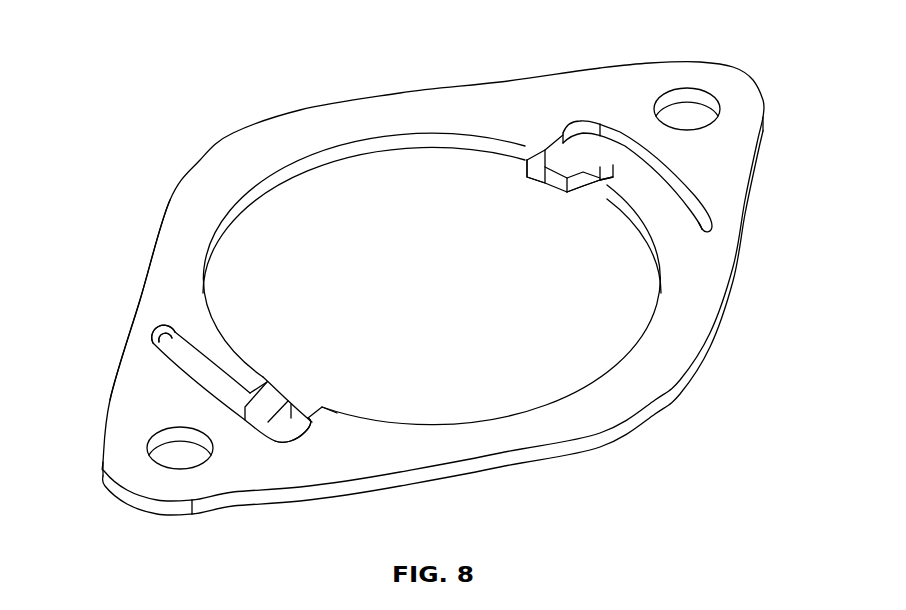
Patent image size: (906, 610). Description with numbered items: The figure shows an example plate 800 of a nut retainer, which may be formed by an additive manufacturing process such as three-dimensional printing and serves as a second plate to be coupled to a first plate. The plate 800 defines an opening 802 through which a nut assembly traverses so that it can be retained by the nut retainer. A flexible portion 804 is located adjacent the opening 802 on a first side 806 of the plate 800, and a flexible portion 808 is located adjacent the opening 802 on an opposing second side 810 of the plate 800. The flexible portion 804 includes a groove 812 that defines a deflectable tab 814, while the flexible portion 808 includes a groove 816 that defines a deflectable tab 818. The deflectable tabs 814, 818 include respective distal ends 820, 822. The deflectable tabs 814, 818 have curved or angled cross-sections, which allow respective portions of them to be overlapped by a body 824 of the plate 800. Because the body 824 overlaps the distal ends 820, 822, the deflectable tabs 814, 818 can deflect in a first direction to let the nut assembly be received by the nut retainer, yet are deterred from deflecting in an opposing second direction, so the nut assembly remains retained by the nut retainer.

The plate 800 is at (122, 87).
The opening 802 is at (351, 190).
The flexible portion 804 is at (172, 311).
The first side 806 is at (235, 522).
The flexible portion 808 is at (691, 243).
The second side 810 is at (604, 63).
The groove 812 is at (173, 348).
The deflectable tab 814 is at (237, 376).
The groove 816 is at (690, 199).
The deflectable tab 818 is at (632, 185).
The distal end 820 is at (291, 418).
The distal end 822 is at (535, 165).
The body 824 is at (176, 218).